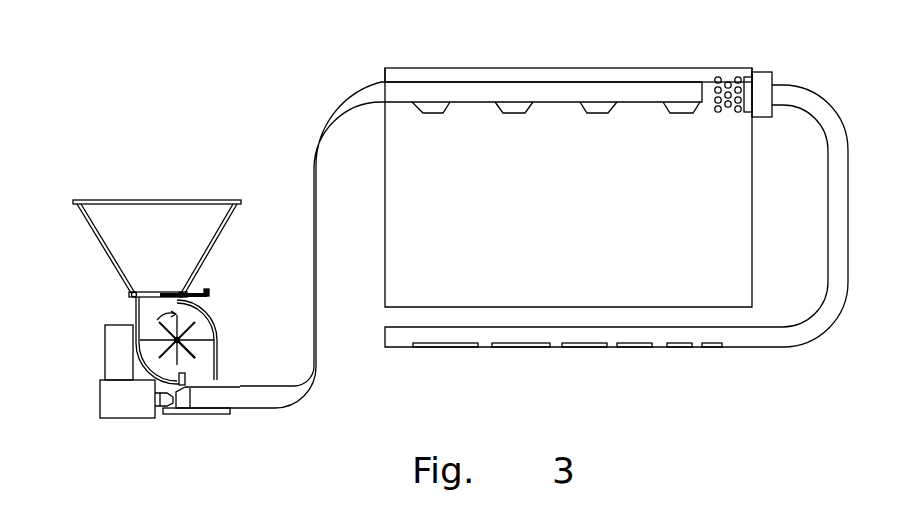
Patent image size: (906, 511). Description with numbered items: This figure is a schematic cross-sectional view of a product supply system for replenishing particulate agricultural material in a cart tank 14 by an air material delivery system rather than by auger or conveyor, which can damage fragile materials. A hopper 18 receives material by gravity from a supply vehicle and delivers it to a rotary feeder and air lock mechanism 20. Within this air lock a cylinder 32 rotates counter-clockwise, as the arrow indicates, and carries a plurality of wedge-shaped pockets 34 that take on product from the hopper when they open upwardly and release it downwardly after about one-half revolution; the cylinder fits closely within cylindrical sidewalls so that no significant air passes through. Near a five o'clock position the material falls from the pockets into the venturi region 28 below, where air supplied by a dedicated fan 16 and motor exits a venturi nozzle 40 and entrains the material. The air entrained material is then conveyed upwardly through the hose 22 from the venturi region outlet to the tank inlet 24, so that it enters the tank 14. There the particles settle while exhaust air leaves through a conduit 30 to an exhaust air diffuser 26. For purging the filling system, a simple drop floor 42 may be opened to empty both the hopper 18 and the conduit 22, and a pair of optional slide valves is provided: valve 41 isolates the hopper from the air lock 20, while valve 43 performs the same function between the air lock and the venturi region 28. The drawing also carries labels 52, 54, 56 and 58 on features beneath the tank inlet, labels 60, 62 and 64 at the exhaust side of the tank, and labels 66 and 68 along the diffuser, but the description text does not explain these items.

The tank 14 is at (755, 247).
The fan 16 is at (104, 355).
The hopper 18 is at (118, 199).
The rotary feeder and air lock mechanism 20 is at (204, 306).
The hose 22 is at (293, 172).
The tank inlet 24 is at (384, 80).
The exhaust air diffuser 26 is at (557, 348).
The venturi region 28 is at (198, 408).
The conduit 30 is at (850, 268).
The cylinder 32 is at (154, 323).
The wedge-shaped pocket 34 is at (200, 347).
The venturi nozzle 40 is at (172, 412).
The slide valve 41 is at (208, 292).
The drop floor 42 is at (213, 416).
The slide valve 43 is at (216, 381).
The nozzle 52 is at (424, 116).
The nozzle 54 is at (508, 116).
The nozzle 56 is at (584, 116).
The nozzle 58 is at (672, 116).
The perforations 60 is at (720, 113).
The screen 62 is at (748, 75).
The outlet fitting 64 is at (765, 78).
The slot 66 is at (714, 350).
The slot 68 is at (445, 348).